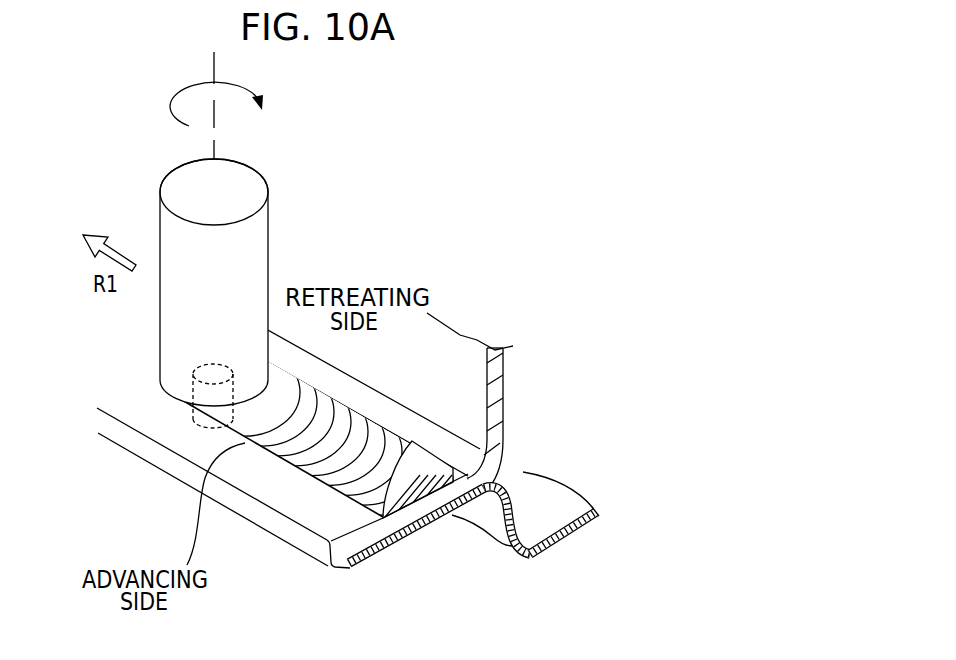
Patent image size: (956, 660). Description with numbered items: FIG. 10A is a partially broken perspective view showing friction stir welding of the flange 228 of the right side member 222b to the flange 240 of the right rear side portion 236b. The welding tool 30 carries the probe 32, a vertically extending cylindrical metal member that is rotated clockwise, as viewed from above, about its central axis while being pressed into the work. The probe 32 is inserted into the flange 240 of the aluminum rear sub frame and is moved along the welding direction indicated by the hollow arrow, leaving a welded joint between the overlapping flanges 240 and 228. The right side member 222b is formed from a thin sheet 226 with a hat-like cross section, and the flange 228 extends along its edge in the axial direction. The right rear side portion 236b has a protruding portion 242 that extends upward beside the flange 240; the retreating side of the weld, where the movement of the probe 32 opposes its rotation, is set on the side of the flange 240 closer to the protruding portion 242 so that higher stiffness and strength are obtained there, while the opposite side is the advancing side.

The welding tool 30 is at (282, 240).
The probe 32 is at (207, 425).
The right side member 222b is at (577, 557).
The thin sheet 226 is at (542, 562).
The flange 228 is at (398, 548).
The right rear side portion 236b is at (510, 430).
The flange 240 is at (267, 522).
The protruding portion 242 is at (495, 371).